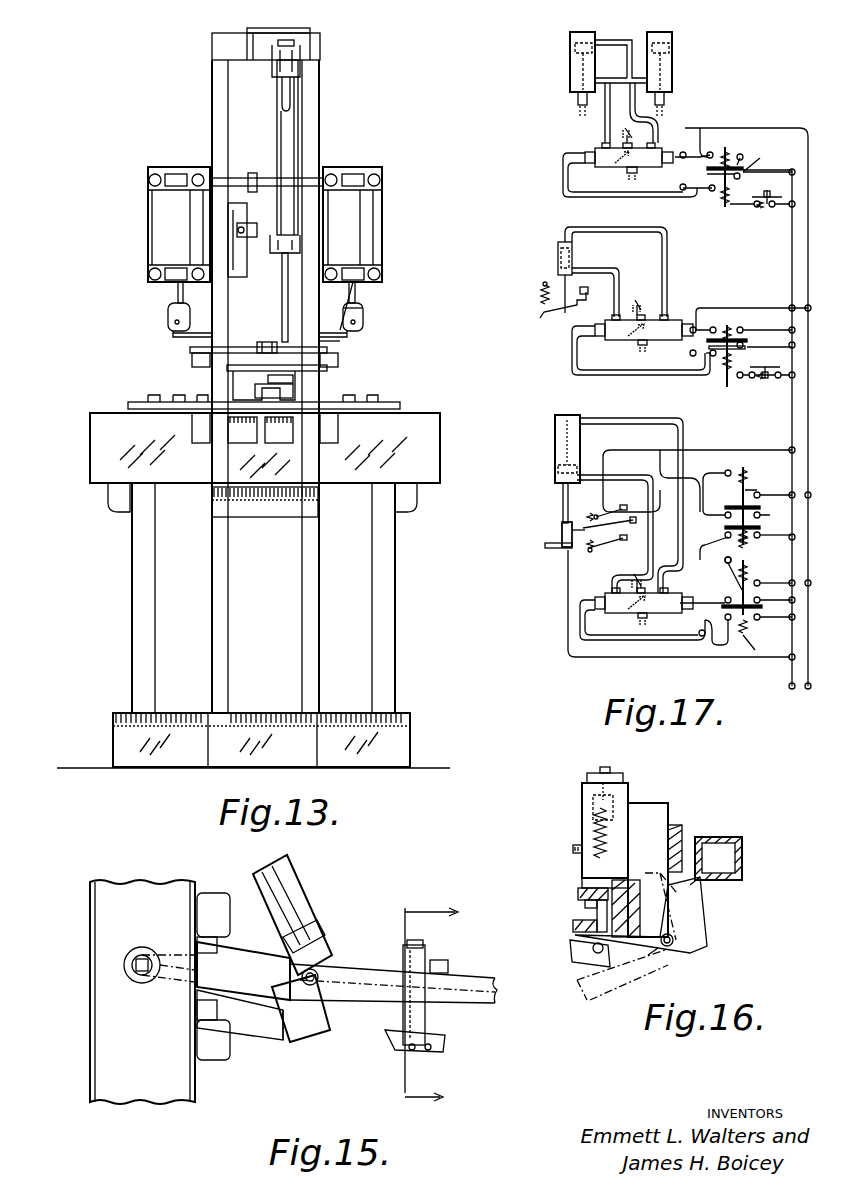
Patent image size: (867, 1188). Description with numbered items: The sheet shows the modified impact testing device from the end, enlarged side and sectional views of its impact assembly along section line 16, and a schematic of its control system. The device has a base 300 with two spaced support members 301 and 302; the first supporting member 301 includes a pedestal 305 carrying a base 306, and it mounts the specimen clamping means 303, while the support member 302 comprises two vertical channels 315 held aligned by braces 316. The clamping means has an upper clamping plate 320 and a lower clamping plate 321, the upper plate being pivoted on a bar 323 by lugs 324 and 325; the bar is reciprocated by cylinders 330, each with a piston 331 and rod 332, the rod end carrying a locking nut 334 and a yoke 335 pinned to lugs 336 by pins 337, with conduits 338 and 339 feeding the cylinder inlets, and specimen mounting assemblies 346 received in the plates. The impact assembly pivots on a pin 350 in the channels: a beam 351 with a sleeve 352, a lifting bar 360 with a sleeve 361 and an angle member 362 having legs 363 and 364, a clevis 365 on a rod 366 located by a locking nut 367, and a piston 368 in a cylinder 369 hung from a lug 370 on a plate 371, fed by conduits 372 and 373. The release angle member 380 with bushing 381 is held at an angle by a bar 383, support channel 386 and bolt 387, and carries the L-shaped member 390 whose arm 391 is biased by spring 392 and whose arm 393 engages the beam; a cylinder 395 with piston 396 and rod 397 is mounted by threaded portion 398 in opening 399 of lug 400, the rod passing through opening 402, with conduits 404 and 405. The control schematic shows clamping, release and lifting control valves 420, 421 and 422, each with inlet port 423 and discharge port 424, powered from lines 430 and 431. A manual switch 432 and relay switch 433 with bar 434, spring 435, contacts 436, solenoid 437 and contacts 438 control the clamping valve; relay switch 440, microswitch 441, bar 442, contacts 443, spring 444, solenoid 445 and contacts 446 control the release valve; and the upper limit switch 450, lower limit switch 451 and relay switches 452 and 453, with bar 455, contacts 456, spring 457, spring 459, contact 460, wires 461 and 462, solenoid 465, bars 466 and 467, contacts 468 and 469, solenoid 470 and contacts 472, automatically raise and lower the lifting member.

In FIG. 13, the base 300 is at (104, 504).
In FIG. 13, the first supporting member 301 is at (126, 534).
In FIG. 13, the support member 302 is at (206, 552).
In FIG. 13, the specimen clamping means 303 is at (136, 207).
In FIG. 13, the pedestal 305 is at (135, 575).
In FIG. 13, the base 306 is at (115, 448).
In FIG. 13, the channel 315 is at (215, 617).
In FIG. 15, the channel 315 is at (115, 1035).
In FIG. 13, the brace 316 is at (226, 46).
In FIG. 13, the upper clamping plate 320 is at (325, 365).
In FIG. 13, the lower clamping plate 321 is at (200, 415).
In FIG. 13, the bar 323 is at (355, 338).
In FIG. 13, the lug 324 is at (230, 349).
In FIG. 13, the lug 325 is at (265, 342).
In FIG. 13, the cylinder 330 is at (165, 230).
In FIG. 17, the cylinder 330 is at (570, 72).
In FIG. 17, the piston 331 is at (572, 50).
In FIG. 13, the rod 332 is at (357, 298).
In FIG. 17, the rod 332 is at (578, 110).
In FIG. 13, the locking nut 334 is at (364, 312).
In FIG. 13, the yoke 335 is at (168, 315).
In FIG. 13, the lug 336 is at (360, 335).
In FIG. 13, the pin 337 is at (170, 330).
In FIG. 13, the conduit 338 is at (335, 180).
In FIG. 17, the conduit 338 is at (616, 40).
In FIG. 13, the conduit 339 is at (325, 278).
In FIG. 17, the conduit 339 is at (605, 137).
In FIG. 13, the specimen mounting assembly 346 is at (378, 402).
In FIG. 15, the pin 350 is at (130, 965).
In FIG. 13, the beam 351 is at (275, 395).
In FIG. 17, the beam 351 is at (589, 290).
In FIG. 16, the beam 351 is at (742, 845).
In FIG. 15, the beam 351 is at (470, 1000).
In FIG. 13, the sleeve 352 is at (263, 390).
In FIG. 13, the bar 360 is at (293, 390).
In FIG. 15, the bar 360 is at (243, 1010).
In FIG. 13, the sleeve 361 is at (293, 376).
In FIG. 13, the angle member 362 is at (290, 397).
In FIG. 17, the angle member 362 is at (562, 535).
In FIG. 15, the angle member 362 is at (302, 1020).
In FIG. 15, the leg 363 is at (303, 1000).
In FIG. 17, the leg 364 is at (556, 548).
In FIG. 15, the leg 364 is at (290, 1045).
In FIG. 15, the clevis 365 is at (305, 935).
In FIG. 13, the rod 366 is at (290, 280).
In FIG. 17, the rod 366 is at (563, 493).
In FIG. 15, the rod 366 is at (270, 900).
In FIG. 15, the locking nut 367 is at (295, 925).
In FIG. 17, the piston 368 is at (558, 468).
In FIG. 13, the cylinder 369 is at (285, 125).
In FIG. 17, the cylinder 369 is at (555, 445).
In FIG. 13, the lug 370 is at (302, 45).
In FIG. 13, the plate 371 is at (312, 30).
In FIG. 13, the conduit 372 is at (292, 90).
In FIG. 17, the conduit 372 is at (620, 421).
In FIG. 13, the conduit 373 is at (298, 245).
In FIG. 17, the conduit 373 is at (612, 490).
In FIG. 13, the angle member 380 is at (233, 390).
In FIG. 16, the angle member 380 is at (668, 835).
In FIG. 13, the bushing 381 is at (240, 368).
In FIG. 13, the bar 383 is at (180, 300).
In FIG. 15, the bar 383 is at (345, 952).
In FIG. 13, the support channel 386 is at (236, 205).
In FIG. 13, the bolt 387 is at (250, 225).
In FIG. 17, the L-shaped member 390 is at (558, 322).
In FIG. 16, the L-shaped member 390 is at (684, 927).
In FIG. 15, the L-shaped member 390 is at (395, 1045).
In FIG. 16, the arm 391 is at (580, 957).
In FIG. 17, the spring 392 is at (542, 298).
In FIG. 16, the spring 392 is at (592, 830).
In FIG. 16, the arm 393 is at (688, 885).
In FIG. 17, the cylinder 395 is at (558, 261).
In FIG. 16, the cylinder 395 is at (590, 800).
In FIG. 15, the cylinder 395 is at (420, 958).
In FIG. 17, the piston 396 is at (557, 248).
In FIG. 17, the rod 397 is at (563, 280).
In FIG. 16, the rod 397 is at (598, 913).
In FIG. 16, the threaded portion 398 is at (582, 882).
In FIG. 16, the opening 399 is at (585, 903).
In FIG. 16, the lug 400 is at (578, 894).
In FIG. 16, the opening 402 is at (575, 928).
In FIG. 17, the conduit 404 is at (575, 230).
In FIG. 16, the conduit 404 is at (605, 768).
In FIG. 17, the conduit 405 is at (605, 270).
In FIG. 16, the conduit 405 is at (572, 849).
In FIG. 17, the clamping control valve 420 is at (620, 160).
In FIG. 17, the release control valve 421 is at (622, 332).
In FIG. 17, the lifting control valve 422 is at (624, 605).
In FIG. 17, the inlet port 423 is at (632, 141).
In FIG. 17, the discharge port 424 is at (637, 172).
In FIG. 17, the power line 430 is at (780, 165).
In FIG. 17, the power line 431 is at (798, 128).
In FIG. 17, the manually operated switch 432 is at (767, 210).
In FIG. 17, the relay switch 433 is at (726, 218).
In FIG. 17, the bar 434 is at (738, 165).
In FIG. 17, the spring 435 is at (725, 150).
In FIG. 17, the contact 436 is at (740, 175).
In FIG. 17, the solenoid 437 is at (722, 198).
In FIG. 17, the contact 438 is at (710, 152).
In FIG. 17, the relay switch 440 is at (736, 385).
In FIG. 17, the microswitch 441 is at (765, 380).
In FIG. 17, the bar 442 is at (735, 325).
In FIG. 17, the contact 443 is at (748, 343).
In FIG. 17, the spring 444 is at (729, 325).
In FIG. 17, the solenoid 445 is at (722, 366).
In FIG. 17, the contact 446 is at (712, 326).
In FIG. 17, the upper limit switch 450 is at (614, 516).
In FIG. 15, the upper limit switch 450 is at (213, 912).
In FIG. 17, the lower limit switch 451 is at (605, 548).
In FIG. 15, the lower limit switch 451 is at (213, 1040).
In FIG. 17, the relay switch 452 is at (783, 582).
In FIG. 17, the relay switch 453 is at (782, 528).
In FIG. 17, the bar 455 is at (735, 598).
In FIG. 17, the contact 456 is at (727, 598).
In FIG. 17, the spring 457 is at (761, 638).
In FIG. 17, the spring 459 is at (733, 548).
In FIG. 17, the contact 460 is at (729, 512).
In FIG. 17, the wire 461 is at (712, 452).
In FIG. 17, the wire 462 is at (662, 490).
In FIG. 17, the solenoid 465 is at (748, 478).
In FIG. 17, the bar 466 is at (742, 483).
In FIG. 17, the bar 467 is at (760, 537).
In FIG. 17, the contact 468 is at (760, 514).
In FIG. 17, the contact 469 is at (720, 542).
In FIG. 17, the solenoid 470 is at (748, 583).
In FIG. 17, the contact 472 is at (758, 619).
In FIG. 15, the section line 16— 16 is at (448, 905).